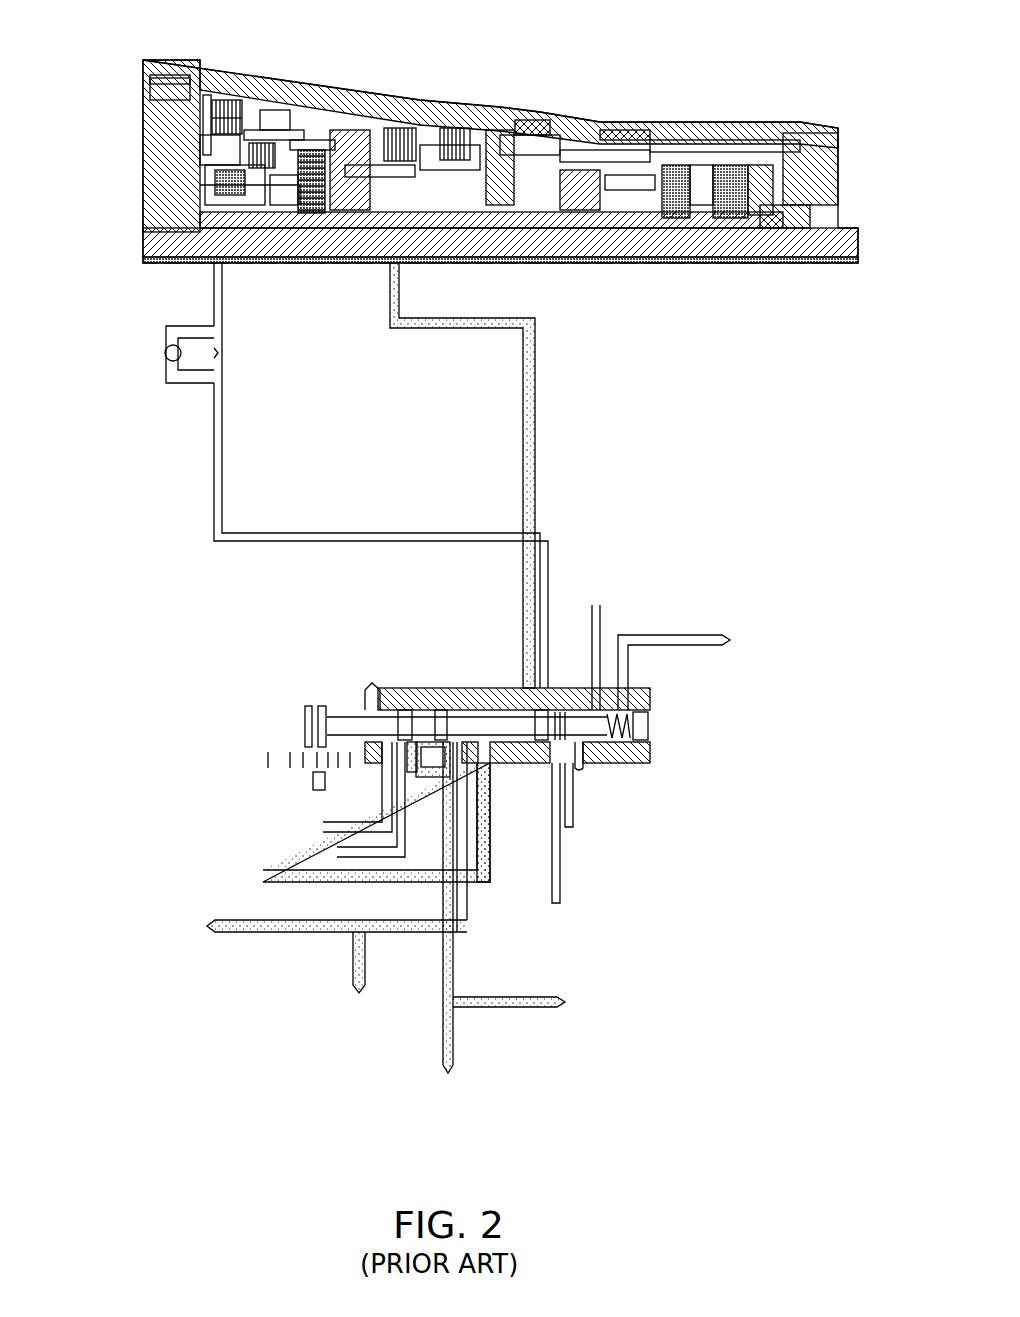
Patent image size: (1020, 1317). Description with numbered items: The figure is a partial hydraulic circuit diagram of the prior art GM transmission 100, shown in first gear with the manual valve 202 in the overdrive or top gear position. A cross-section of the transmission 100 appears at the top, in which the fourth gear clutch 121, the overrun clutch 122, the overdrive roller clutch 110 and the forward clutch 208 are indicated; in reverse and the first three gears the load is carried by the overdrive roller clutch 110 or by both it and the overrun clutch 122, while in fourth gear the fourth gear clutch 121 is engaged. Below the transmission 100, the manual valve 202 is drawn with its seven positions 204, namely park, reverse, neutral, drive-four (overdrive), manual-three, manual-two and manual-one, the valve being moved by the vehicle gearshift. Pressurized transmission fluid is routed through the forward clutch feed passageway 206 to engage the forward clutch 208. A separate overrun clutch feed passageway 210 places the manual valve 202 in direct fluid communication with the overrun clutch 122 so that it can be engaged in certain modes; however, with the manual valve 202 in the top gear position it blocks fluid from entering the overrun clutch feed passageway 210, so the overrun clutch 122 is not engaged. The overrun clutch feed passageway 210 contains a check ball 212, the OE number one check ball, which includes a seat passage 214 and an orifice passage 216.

The transmission 100 is at (560, 44).
The fourth gear clutch 121 is at (222, 100).
The overrun clutch 122 is at (255, 125).
The forward clutch 208 is at (402, 128).
The overdrive roller clutch 110 is at (292, 238).
The forward clutch feed passageway 206 is at (536, 382).
The overrun clutch feed passageway 210 is at (213, 535).
The check ball 212 is at (142, 347).
The seat passage 214 is at (165, 355).
The orifice passage 216 is at (223, 353).
The manual valve 202 is at (299, 695).
The positions 204 is at (250, 786).